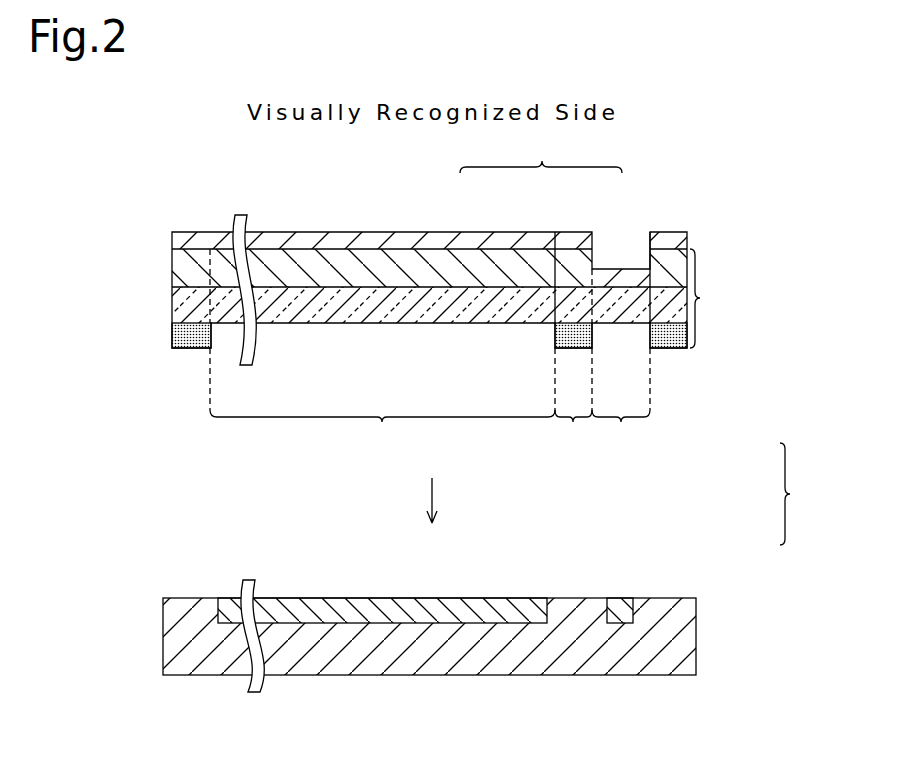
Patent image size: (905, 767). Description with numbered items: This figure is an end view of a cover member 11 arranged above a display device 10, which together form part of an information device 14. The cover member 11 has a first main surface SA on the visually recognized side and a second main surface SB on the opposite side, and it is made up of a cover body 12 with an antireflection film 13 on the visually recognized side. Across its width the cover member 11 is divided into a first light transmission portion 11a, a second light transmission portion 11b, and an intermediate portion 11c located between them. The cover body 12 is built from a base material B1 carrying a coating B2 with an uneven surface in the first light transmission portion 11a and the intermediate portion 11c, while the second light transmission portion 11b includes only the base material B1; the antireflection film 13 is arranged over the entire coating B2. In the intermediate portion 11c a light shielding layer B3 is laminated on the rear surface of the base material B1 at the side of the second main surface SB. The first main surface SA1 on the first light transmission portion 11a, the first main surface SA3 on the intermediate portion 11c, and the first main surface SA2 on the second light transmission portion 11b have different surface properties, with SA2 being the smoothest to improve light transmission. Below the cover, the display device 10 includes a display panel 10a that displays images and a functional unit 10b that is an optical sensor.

The display device 10 is at (469, 605).
The display panel 10a is at (313, 598).
The functional unit 10b is at (619, 598).
The cover member 11 is at (445, 301).
The first light transmission portion 11a is at (382, 432).
The second light transmission portion 11b is at (621, 432).
The intermediate portion 11c is at (573, 432).
The cover body 12 is at (711, 298).
The antireflection film 13 is at (357, 232).
The information device 14 is at (802, 494).
The base material B1 is at (172, 300).
The coating B2 is at (172, 268).
The light shielding layer B3 is at (555, 337).
The first main surface SA is at (541, 152).
The first main surface on the first light transmission portion SA1 is at (495, 232).
The first main surface on the second light transmission portion SA2 is at (602, 268).
The first main surface on the intermediate portion SA3 is at (565, 232).
The second main surface SB is at (383, 323).